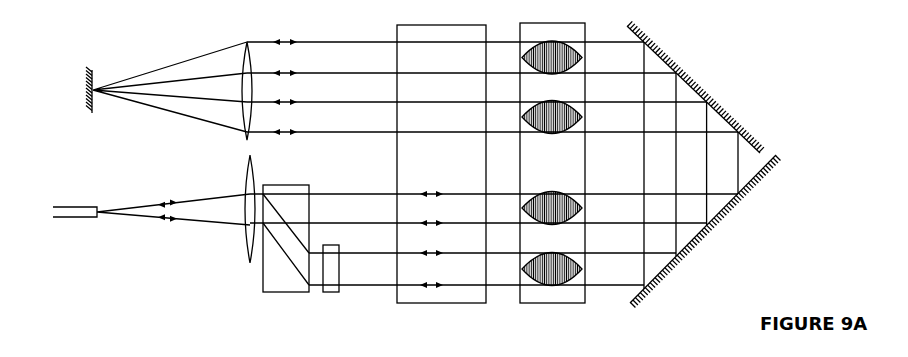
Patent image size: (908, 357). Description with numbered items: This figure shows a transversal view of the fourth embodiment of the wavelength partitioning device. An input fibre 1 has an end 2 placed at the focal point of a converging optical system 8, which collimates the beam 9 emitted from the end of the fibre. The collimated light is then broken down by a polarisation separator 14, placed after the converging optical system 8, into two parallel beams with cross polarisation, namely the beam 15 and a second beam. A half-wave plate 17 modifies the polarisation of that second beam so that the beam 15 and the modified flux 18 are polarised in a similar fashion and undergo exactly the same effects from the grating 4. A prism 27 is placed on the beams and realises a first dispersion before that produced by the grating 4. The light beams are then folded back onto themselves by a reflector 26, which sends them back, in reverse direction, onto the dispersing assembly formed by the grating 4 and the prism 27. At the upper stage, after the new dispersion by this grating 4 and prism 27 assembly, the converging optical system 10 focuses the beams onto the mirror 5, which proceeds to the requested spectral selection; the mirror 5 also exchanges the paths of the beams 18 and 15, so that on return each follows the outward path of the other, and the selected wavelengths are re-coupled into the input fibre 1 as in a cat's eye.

The input fibre 1 is at (67, 207).
The end of the input fibre 2 is at (105, 205).
The grating 4 is at (553, 298).
The mirror 5 is at (90, 88).
The converging optical system 8 is at (253, 177).
The beam 9 is at (203, 205).
The converging optical system 10 is at (243, 67).
The polarisation separator 14 is at (270, 268).
The beam 15 is at (330, 210).
The half-wave plate 17 is at (333, 275).
The modified flux 18 is at (362, 270).
The reflector 26 is at (678, 262).
The prism 27 is at (435, 297).